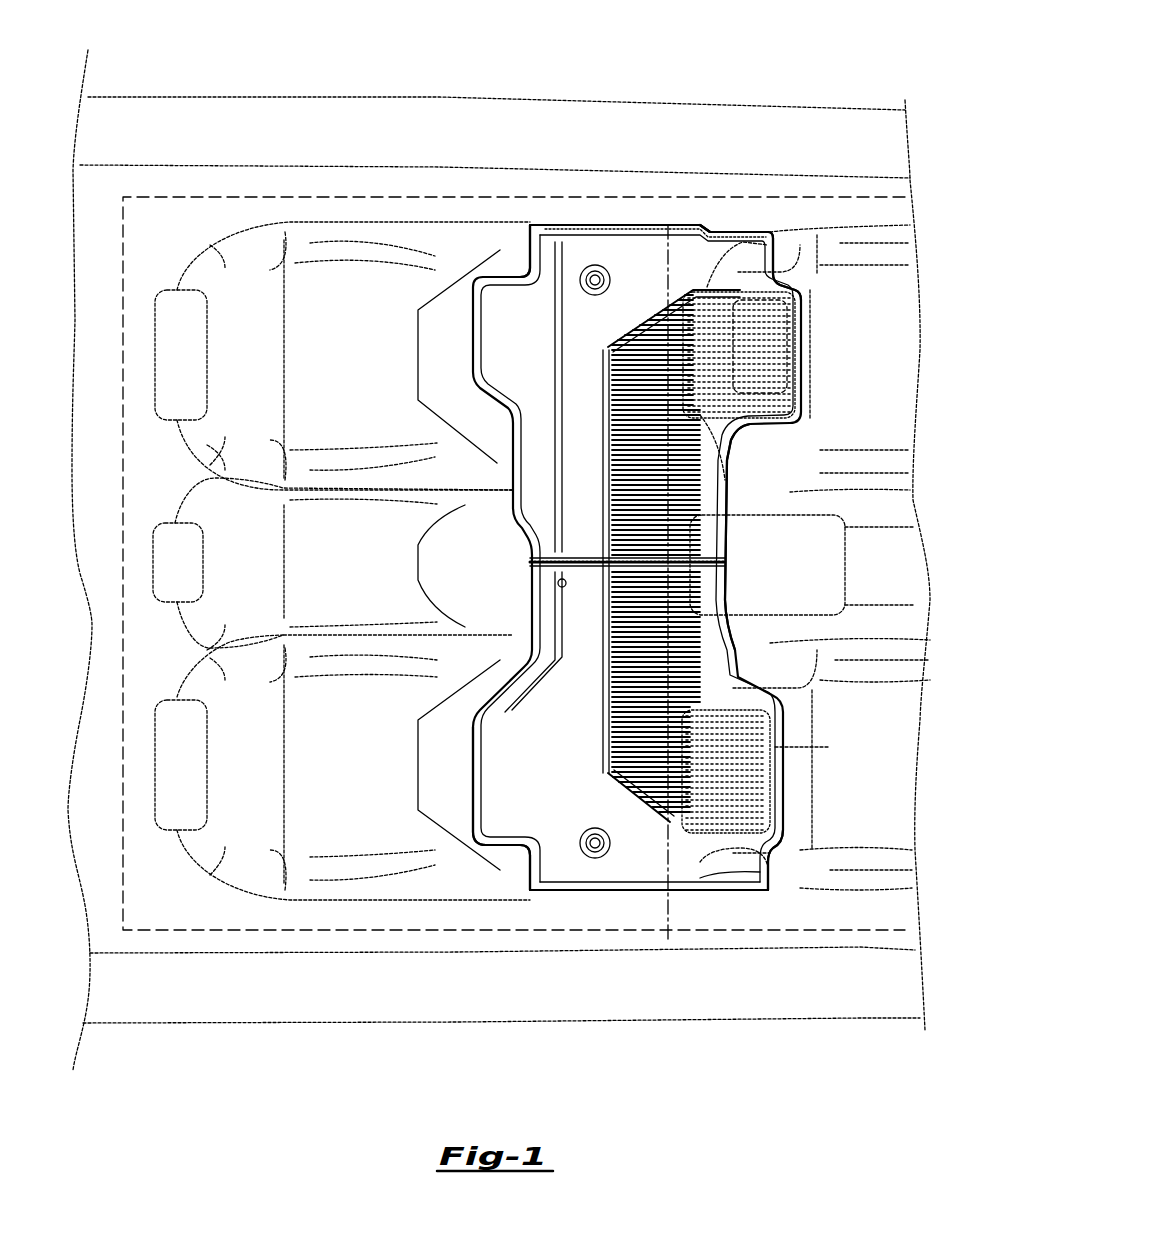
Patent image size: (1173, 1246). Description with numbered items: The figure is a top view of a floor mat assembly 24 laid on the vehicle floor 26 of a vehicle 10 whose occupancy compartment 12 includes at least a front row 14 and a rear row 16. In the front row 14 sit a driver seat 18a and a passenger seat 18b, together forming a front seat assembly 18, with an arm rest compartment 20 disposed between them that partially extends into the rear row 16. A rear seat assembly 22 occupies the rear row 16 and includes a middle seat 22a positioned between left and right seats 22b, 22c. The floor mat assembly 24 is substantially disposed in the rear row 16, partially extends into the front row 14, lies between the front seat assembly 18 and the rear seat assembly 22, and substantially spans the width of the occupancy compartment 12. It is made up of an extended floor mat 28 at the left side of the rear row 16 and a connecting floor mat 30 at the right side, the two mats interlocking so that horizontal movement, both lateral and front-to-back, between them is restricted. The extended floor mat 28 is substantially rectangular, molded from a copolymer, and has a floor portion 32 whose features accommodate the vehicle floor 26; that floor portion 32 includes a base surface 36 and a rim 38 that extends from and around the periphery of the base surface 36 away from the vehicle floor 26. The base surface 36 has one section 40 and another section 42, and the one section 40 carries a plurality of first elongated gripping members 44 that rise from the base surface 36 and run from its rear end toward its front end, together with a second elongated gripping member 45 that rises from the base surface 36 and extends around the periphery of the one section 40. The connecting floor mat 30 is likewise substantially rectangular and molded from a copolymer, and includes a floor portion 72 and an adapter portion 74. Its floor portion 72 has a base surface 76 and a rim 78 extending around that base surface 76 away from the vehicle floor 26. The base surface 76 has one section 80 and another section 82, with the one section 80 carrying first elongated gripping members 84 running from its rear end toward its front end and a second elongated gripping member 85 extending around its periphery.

The vehicle 10 is at (778, 66).
The occupancy compartment 12 is at (325, 942).
The front row 14 is at (870, 195).
The rear row 16 is at (403, 190).
The front seat assembly 18 is at (849, 548).
The driver seat 18a is at (888, 258).
The passenger seat 18b is at (900, 887).
The arm rest compartment 20 is at (820, 572).
The rear seat assembly 22 is at (327, 511).
The middle seat 22a is at (183, 562).
The left seat 22b is at (183, 340).
The right seat 22c is at (183, 770).
The floor mat assembly 24 is at (672, 537).
The vehicle floor 26 is at (462, 185).
The extended floor mat 28 is at (595, 220).
The connecting floor mat 30 is at (628, 900).
The floor portion 32 is at (672, 220).
The base surface 36 is at (700, 272).
The rim 38 is at (575, 232).
The one section 40 is at (703, 458).
The another section 42 is at (745, 255).
The first elongated gripping members 44 is at (690, 548).
The second elongated gripping member 45 is at (605, 360).
The floor portion 72 is at (560, 900).
The adapter portion 74 is at (720, 575).
The base surface 76 is at (698, 855).
The rim 78 is at (670, 905).
The one section 80 is at (748, 776).
The another section 82 is at (742, 852).
The first elongated gripping members 84 is at (690, 640).
The second elongated gripping member 85 is at (660, 813).